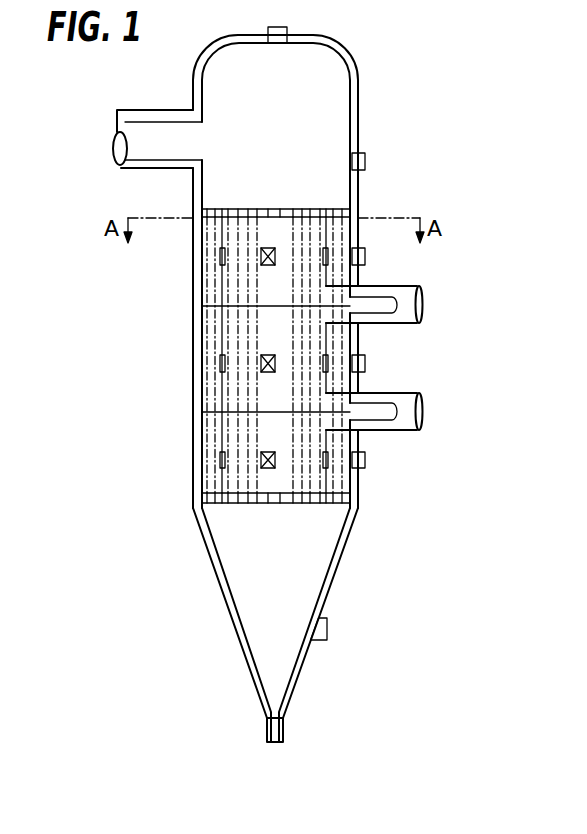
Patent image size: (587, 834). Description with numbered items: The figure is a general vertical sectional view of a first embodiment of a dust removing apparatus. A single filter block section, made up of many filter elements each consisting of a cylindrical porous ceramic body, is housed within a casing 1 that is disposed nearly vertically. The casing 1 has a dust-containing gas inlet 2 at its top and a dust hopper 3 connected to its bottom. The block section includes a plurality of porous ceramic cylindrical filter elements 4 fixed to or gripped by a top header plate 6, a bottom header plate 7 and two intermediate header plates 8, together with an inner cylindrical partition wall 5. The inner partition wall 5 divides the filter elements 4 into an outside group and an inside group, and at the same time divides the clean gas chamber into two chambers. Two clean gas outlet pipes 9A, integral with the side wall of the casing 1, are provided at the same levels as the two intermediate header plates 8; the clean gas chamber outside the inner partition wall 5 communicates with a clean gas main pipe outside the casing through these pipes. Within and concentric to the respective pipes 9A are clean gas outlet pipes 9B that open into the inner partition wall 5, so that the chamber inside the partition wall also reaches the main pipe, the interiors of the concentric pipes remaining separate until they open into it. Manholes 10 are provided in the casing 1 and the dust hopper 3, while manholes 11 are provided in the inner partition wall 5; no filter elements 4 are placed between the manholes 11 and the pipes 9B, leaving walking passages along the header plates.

The casing 1 is at (365, 123).
The dust-containing gas inlet 2 is at (91, 137).
The dust hopper 3 is at (333, 586).
The porous ceramic cylindrical filter elements 4 is at (342, 282).
The inner cylindrical partition wall 5 is at (327, 233).
The top header plate 6 is at (334, 211).
The bottom header plate 7 is at (334, 507).
The intermediate header plates 8 is at (213, 412).
The clean gas outlet pipes 9A is at (415, 285).
The clean gas outlet pipes 9B is at (382, 313).
The manholes 10 is at (262, 449).
The manholes 11 is at (219, 260).